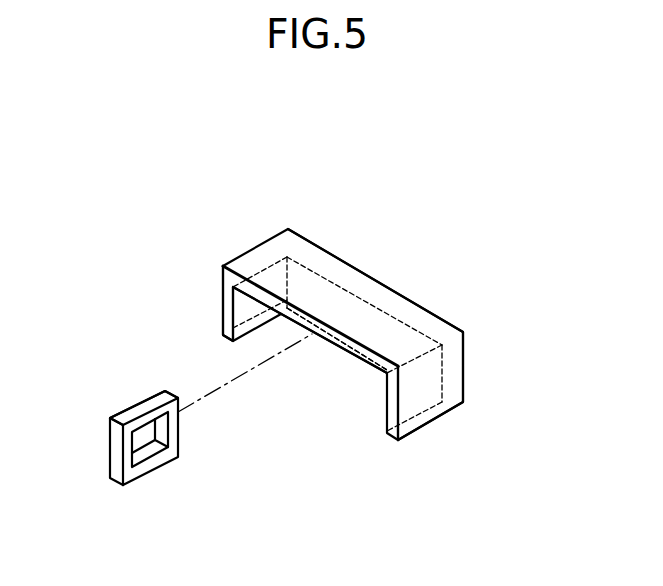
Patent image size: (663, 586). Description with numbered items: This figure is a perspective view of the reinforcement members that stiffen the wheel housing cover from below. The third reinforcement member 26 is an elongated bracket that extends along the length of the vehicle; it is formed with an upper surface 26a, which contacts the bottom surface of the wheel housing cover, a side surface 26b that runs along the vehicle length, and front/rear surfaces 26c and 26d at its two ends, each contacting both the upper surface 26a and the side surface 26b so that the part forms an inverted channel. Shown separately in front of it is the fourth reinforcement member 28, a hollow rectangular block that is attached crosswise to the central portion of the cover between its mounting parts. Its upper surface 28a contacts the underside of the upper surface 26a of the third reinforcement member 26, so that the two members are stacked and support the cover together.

The third reinforcement member 26 is at (385, 246).
The upper surface 26a is at (328, 298).
The side surface 26b is at (437, 314).
The front/rear surface 26c is at (463, 374).
The front/rear surface 26d is at (238, 256).
The fourth reinforcement member 28 is at (124, 389).
The upper surface 28a is at (140, 407).